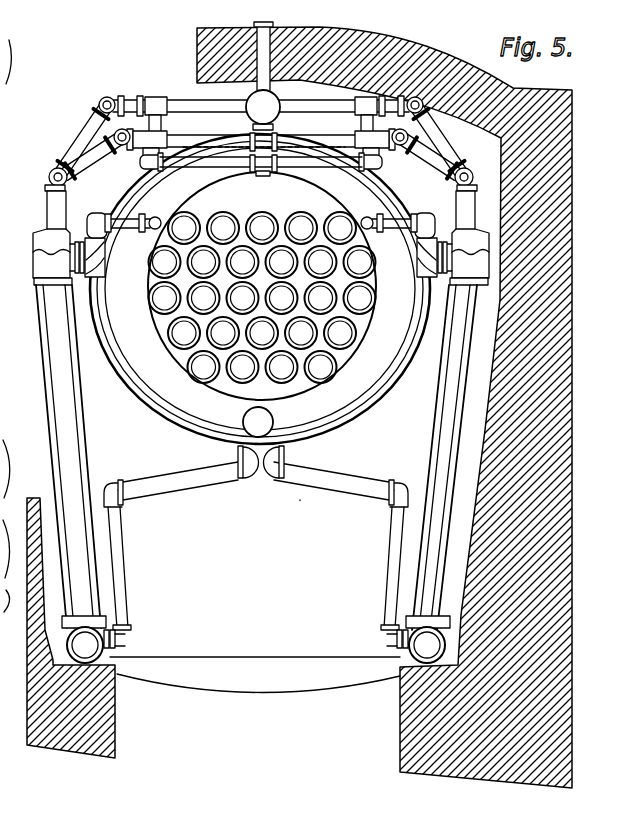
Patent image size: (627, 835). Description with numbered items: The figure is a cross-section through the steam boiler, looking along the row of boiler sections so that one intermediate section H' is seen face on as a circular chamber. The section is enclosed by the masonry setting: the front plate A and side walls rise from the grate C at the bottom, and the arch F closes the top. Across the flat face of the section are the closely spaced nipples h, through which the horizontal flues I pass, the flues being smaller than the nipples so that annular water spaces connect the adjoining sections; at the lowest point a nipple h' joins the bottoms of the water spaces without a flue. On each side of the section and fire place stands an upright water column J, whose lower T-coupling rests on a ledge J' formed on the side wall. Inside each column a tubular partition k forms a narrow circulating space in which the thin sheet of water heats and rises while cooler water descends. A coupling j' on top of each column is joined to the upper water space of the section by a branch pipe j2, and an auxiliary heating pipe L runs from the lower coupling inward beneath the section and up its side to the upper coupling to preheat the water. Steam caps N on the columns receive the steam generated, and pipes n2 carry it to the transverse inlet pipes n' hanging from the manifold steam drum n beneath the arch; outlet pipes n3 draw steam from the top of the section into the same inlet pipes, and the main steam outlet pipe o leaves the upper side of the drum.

The front plate A is at (543, 473).
The grate C is at (255, 675).
The arch F is at (374, 266).
The intermediate boiler section H' is at (260, 289).
The nipples h is at (248, 286).
The lower nipples h' is at (258, 422).
The horizontal flues I is at (262, 297).
The water columns J is at (245, 457).
The ledges J' is at (256, 669).
The upper couplings j' is at (301, 257).
The branch pipes j2 is at (118, 225).
The tubular partition k is at (70, 436).
The auxiliary heating pipes L is at (150, 513).
The steam caps N is at (30, 224).
The manifold steam drum n is at (261, 110).
The transverse inlet pipes n' is at (261, 133).
The connecting pipes n2 is at (78, 160).
The transverse steam outlet pipes n3 is at (193, 157).
The main steam outlet pipe o is at (275, 25).